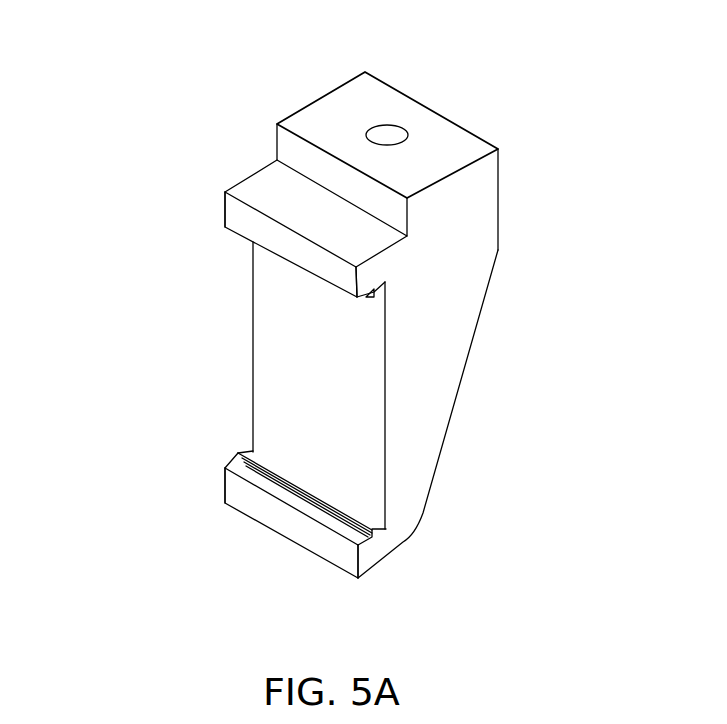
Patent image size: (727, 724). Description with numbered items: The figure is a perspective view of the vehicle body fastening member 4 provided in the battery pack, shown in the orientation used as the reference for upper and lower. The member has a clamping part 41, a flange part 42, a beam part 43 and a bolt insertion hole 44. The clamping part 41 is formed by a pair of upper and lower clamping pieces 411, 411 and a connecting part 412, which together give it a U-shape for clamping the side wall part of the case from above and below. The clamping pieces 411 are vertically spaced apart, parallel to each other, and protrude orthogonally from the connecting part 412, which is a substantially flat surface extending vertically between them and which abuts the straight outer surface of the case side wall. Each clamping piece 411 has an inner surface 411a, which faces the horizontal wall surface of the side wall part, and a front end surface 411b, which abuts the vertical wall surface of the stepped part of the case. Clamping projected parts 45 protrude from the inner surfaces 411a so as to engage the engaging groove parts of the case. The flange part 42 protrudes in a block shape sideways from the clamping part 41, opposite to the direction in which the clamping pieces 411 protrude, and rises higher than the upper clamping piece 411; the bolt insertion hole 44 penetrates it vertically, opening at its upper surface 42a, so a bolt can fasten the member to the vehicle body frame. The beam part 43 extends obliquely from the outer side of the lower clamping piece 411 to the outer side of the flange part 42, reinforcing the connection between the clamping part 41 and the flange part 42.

The vehicle body fastening member 4 is at (503, 98).
The clamping part 41 is at (92, 250).
The clamping piece 411 is at (225, 205).
The inner surface 411a is at (372, 312).
The front end surface 411b is at (262, 220).
The connecting part 412 is at (270, 338).
The flange part 42 is at (500, 175).
The upper surface 42a is at (327, 113).
The beam part 43 is at (460, 400).
The bolt insertion hole 44 is at (387, 128).
The clamping projected part 45 is at (358, 298).